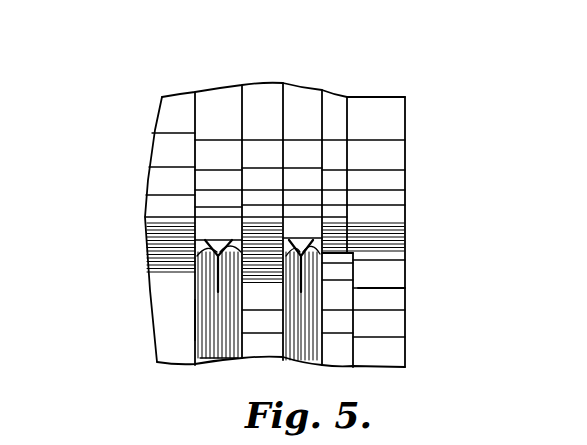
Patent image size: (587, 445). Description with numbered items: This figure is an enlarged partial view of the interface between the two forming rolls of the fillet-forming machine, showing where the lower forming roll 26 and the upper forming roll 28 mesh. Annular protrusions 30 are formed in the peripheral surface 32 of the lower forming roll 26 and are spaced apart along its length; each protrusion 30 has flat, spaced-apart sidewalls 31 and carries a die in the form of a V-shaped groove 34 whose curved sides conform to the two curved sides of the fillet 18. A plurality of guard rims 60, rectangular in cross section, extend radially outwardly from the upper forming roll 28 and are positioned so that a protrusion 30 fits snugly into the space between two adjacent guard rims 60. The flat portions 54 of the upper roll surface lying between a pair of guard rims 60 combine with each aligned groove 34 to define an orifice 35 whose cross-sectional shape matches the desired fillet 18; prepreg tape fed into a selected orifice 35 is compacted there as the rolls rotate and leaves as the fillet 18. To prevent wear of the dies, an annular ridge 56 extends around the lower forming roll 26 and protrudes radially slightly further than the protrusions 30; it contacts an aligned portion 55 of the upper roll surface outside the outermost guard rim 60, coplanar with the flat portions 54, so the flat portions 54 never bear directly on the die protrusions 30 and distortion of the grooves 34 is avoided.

The fillet 18 is at (300, 255).
The lower forming roll 26 is at (409, 323).
The upper forming roll 28 is at (415, 168).
The annular protrusion 30 is at (183, 318).
The sidewall 31 is at (225, 330).
The peripheral surface 32 is at (405, 288).
The groove 34 is at (299, 345).
The orifice 35 is at (240, 232).
The flat portion 54 is at (213, 243).
The aligned portion 55 is at (350, 228).
The annular ridge 56 is at (355, 254).
The guard rim 60 is at (258, 102).